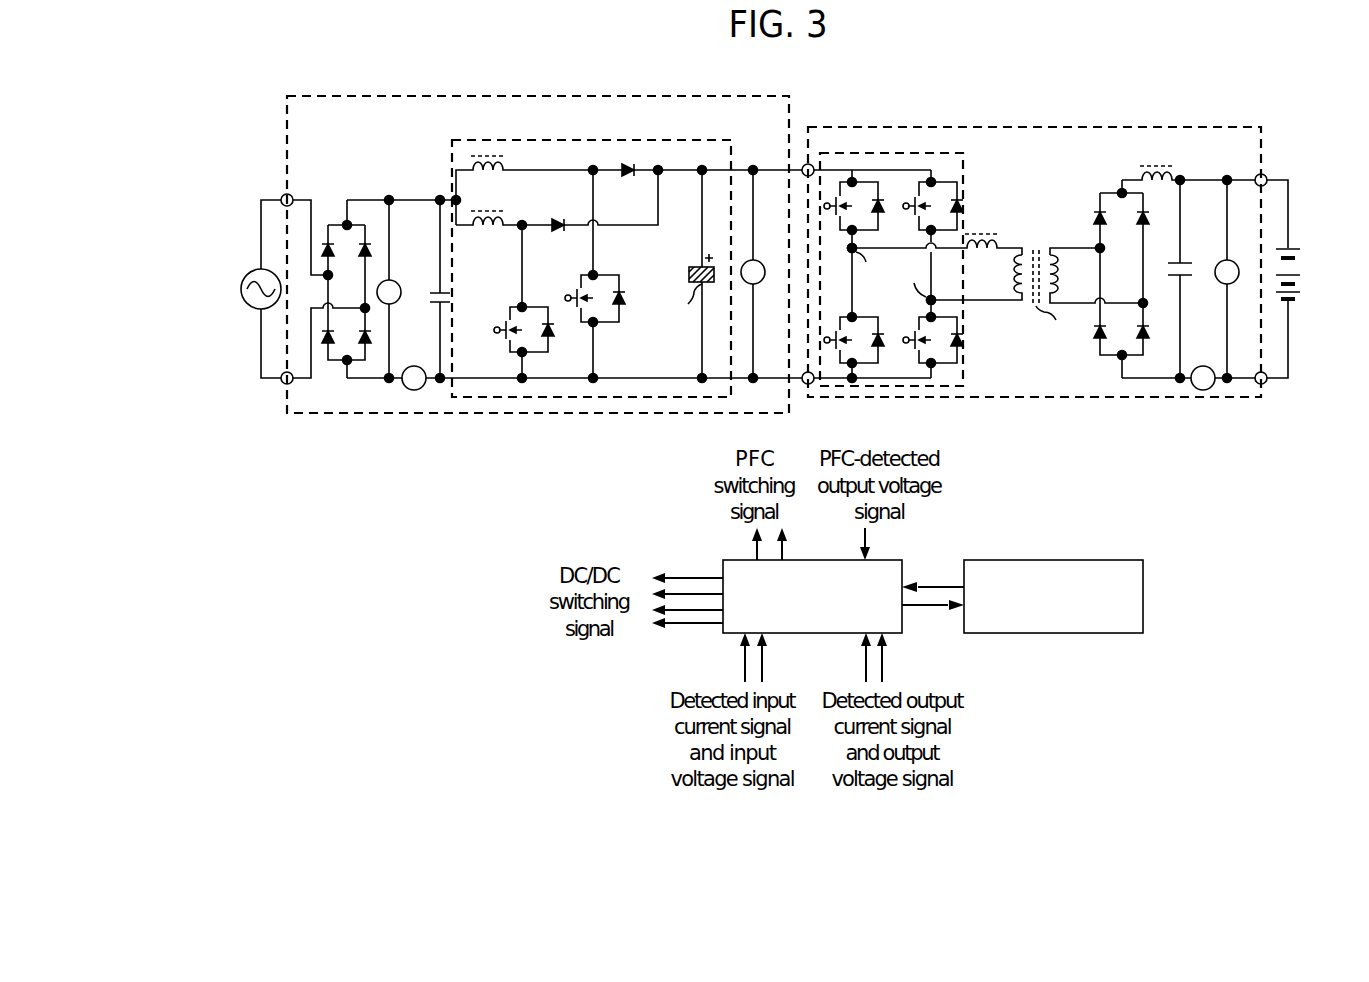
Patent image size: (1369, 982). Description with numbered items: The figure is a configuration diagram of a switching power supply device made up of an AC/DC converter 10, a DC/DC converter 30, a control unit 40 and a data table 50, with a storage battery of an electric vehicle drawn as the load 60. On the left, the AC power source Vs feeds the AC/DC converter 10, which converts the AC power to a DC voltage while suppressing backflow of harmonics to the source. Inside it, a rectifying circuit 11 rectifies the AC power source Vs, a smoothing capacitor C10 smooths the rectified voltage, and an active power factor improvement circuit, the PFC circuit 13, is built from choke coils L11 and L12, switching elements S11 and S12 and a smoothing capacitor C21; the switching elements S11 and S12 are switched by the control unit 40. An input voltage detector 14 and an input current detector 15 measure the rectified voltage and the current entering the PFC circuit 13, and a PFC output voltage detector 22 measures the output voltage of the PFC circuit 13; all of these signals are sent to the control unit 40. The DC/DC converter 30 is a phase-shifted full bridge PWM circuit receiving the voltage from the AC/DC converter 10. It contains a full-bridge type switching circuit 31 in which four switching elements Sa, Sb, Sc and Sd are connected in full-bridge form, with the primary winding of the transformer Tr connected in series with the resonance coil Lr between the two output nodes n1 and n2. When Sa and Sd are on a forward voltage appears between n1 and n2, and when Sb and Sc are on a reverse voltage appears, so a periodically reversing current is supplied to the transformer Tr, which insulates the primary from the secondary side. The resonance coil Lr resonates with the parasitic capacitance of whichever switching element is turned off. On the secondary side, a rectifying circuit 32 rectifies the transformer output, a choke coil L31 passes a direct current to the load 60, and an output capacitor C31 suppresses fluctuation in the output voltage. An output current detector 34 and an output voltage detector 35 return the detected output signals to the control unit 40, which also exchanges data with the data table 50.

The AC/DC converter 10 is at (388, 96).
The rectifying circuit 11 is at (350, 220).
The PFC circuit 13 is at (590, 140).
The input voltage detector 14 is at (396, 282).
The input current detector 15 is at (413, 366).
The PFC output voltage detector 22 is at (757, 262).
The DC/DC converter 30 is at (1022, 127).
The full-bridge type switching circuit 31 is at (920, 153).
The rectifying circuit 32 is at (1109, 190).
The output current detector 34 is at (1204, 359).
The output voltage detector 35 is at (1231, 259).
The control unit 40 is at (813, 560).
The data table 50 is at (1052, 560).
The load 60 is at (1293, 248).
The AC power source Vs is at (259, 289).
The smoothing capacitor C10 is at (456, 289).
The choke coil L11 is at (524, 178).
The choke coil L12 is at (489, 231).
The switching element S11 is at (594, 292).
The switching element S12 is at (518, 318).
The smoothing capacitor C21 is at (689, 274).
The switching element Sa is at (856, 201).
The switching element Sb is at (855, 332).
The switching element Sc is at (933, 201).
The switching element Sd is at (938, 332).
The output node n1 is at (867, 264).
The output node n2 is at (919, 283).
The resonance coil Lr is at (937, 237).
The transformer Tr is at (1037, 295).
The choke coil L31 is at (1188, 163).
The output capacitor C31 is at (1195, 279).